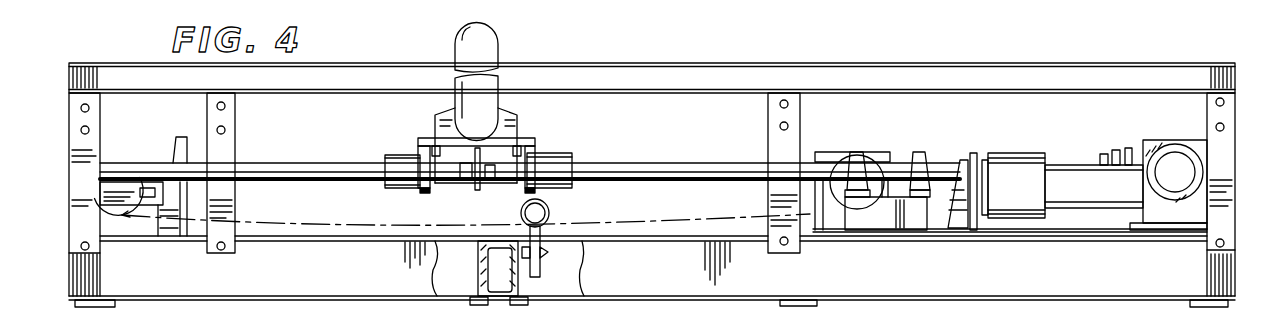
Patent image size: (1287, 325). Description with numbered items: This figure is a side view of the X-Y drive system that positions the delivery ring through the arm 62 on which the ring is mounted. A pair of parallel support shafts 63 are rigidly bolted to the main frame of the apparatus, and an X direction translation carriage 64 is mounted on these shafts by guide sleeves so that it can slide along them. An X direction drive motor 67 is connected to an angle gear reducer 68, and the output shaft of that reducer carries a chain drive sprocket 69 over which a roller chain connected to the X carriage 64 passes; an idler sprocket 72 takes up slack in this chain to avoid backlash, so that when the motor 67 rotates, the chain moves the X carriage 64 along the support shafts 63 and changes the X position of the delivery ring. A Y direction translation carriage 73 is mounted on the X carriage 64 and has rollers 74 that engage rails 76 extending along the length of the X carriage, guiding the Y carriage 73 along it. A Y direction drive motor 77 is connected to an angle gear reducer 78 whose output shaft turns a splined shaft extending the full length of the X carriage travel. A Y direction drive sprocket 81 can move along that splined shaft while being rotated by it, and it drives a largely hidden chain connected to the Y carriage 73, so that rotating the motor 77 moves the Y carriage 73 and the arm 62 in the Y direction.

The arm 62 is at (499, 58).
The support shafts 63 is at (626, 165).
The X direction translation carriage 64 is at (560, 157).
The X direction drive motor 67 is at (1015, 155).
The angle gear reducer 68 is at (872, 156).
The chain drive sprocket 69 is at (870, 208).
The idler sprocket 72 is at (552, 213).
The Y direction translation carriage 73 is at (517, 116).
The rollers 74 is at (422, 165).
The rails 76 is at (535, 142).
The Y direction drive motor 77 is at (1157, 147).
The angle gear reducer 78 is at (1196, 140).
The Y direction drive sprocket 81 is at (475, 192).